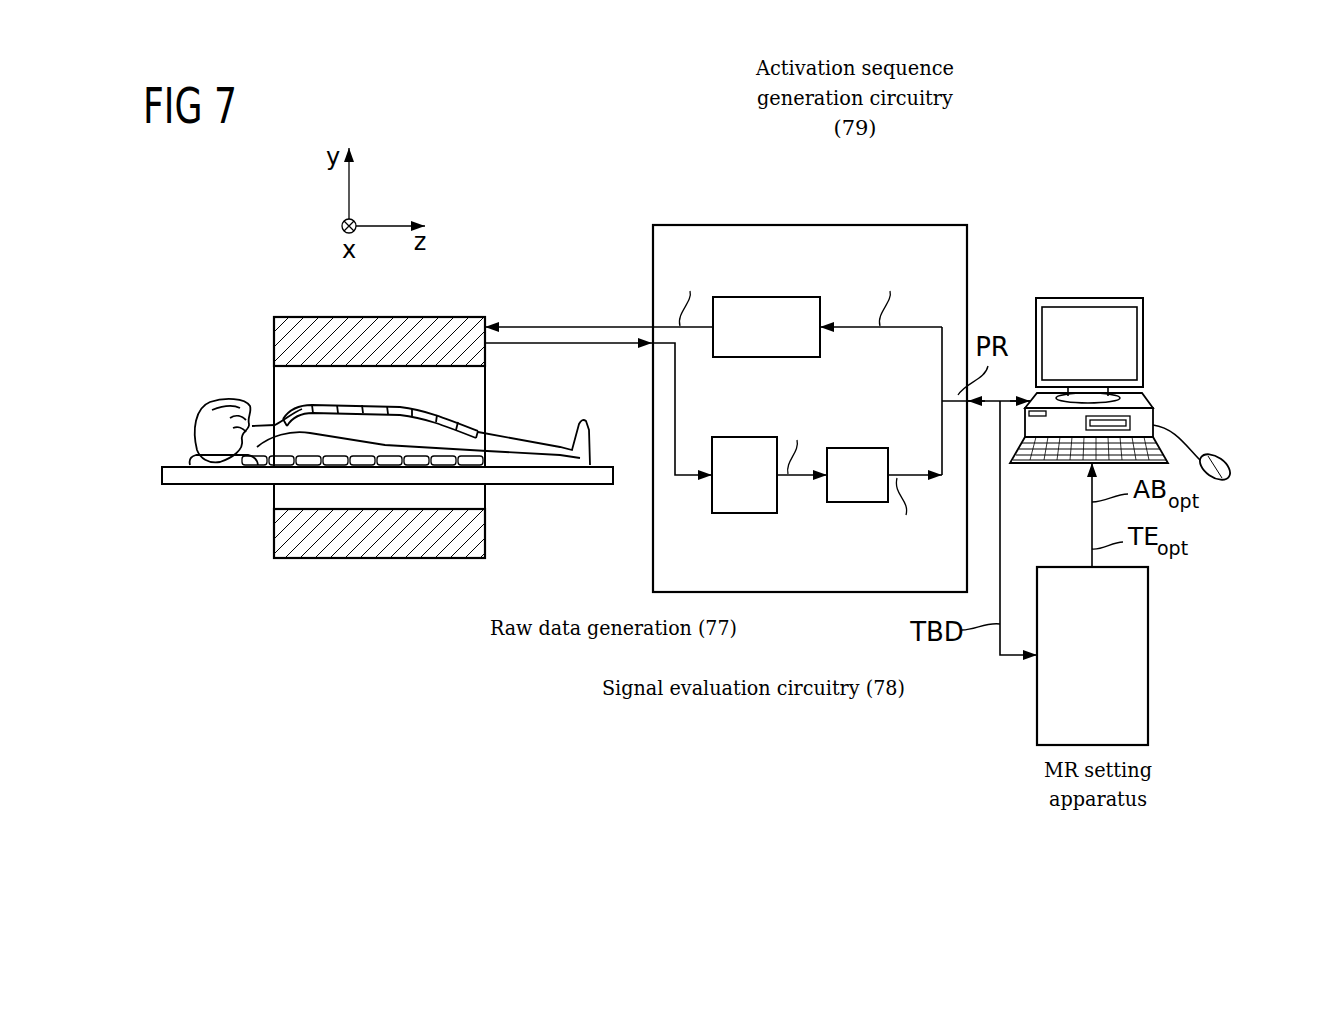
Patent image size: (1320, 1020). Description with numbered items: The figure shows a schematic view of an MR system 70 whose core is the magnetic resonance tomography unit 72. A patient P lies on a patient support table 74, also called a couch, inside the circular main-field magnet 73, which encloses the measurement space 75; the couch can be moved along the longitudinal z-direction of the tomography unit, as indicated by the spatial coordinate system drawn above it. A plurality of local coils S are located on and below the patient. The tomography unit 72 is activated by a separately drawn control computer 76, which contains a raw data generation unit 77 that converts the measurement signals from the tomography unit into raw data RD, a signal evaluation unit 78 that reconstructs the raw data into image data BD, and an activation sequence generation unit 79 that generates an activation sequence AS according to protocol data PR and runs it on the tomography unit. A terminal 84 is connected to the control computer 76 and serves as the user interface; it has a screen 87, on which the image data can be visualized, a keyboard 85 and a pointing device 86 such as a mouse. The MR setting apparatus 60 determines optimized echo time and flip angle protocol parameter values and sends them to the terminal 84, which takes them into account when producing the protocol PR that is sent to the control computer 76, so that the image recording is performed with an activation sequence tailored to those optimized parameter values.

The MR setting apparatus 60 is at (1036, 706).
The MR system 70 is at (609, 208).
The magnetic resonance tomography unit 72 is at (436, 293).
The main-field magnet 73 is at (307, 324).
The patient support table 74 is at (553, 485).
The measurement space 75 is at (389, 373).
The control computer 76 is at (812, 225).
The raw data generation unit 77 is at (745, 513).
The signal evaluation unit 78 is at (857, 502).
The activation sequence generation unit 79 is at (765, 297).
The terminal 84 is at (1091, 289).
The keyboard 85 is at (1048, 466).
The pointing device 86 is at (1225, 458).
The screen 87 is at (1130, 344).
The patient P is at (196, 431).
The local coils S is at (306, 412).